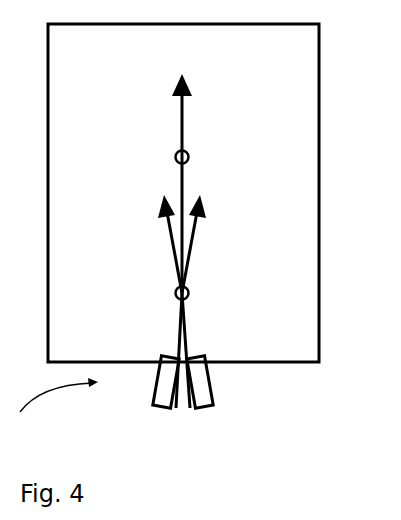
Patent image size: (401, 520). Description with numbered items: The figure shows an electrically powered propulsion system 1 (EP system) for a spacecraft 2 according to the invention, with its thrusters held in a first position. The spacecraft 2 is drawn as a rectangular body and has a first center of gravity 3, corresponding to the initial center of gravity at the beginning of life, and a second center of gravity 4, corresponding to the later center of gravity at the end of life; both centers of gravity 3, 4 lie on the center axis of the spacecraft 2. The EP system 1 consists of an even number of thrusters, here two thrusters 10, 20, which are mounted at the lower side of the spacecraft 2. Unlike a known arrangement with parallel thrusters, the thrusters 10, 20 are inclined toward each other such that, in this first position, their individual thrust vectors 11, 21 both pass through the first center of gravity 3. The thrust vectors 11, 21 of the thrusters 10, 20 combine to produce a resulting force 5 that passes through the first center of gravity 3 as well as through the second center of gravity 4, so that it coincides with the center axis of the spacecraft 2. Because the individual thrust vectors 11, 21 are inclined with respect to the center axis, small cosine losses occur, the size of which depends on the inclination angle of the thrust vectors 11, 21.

The electrically powered propulsion system 1 is at (400, 405).
The spacecraft 2 is at (319, 110).
The first center of gravity 3 is at (189, 290).
The second center of gravity 4 is at (190, 152).
The resulting force 5 is at (190, 110).
The thruster 10 is at (160, 408).
The thrust vector 11 is at (176, 327).
The thruster 20 is at (205, 408).
The thrust vector 21 is at (167, 228).